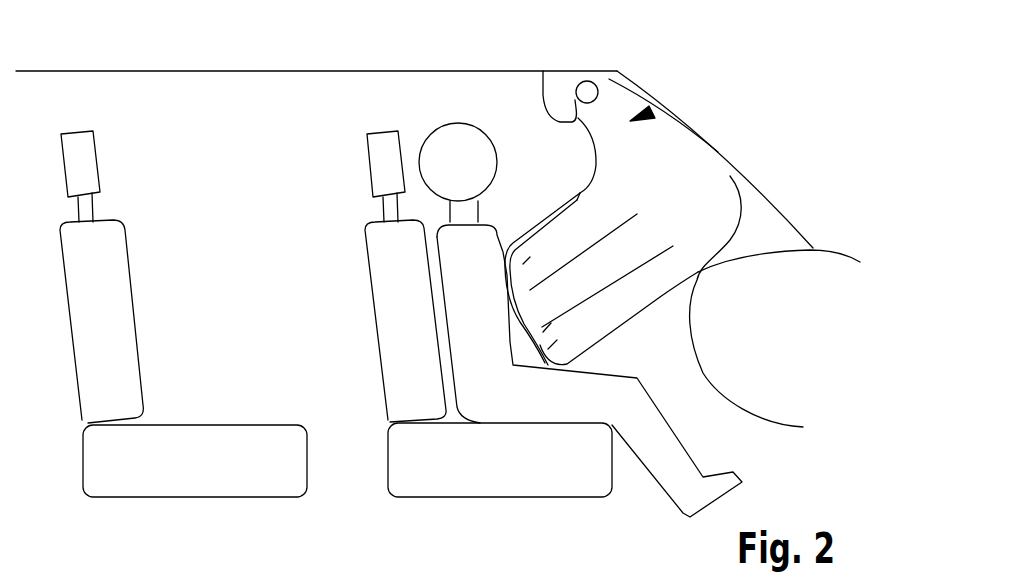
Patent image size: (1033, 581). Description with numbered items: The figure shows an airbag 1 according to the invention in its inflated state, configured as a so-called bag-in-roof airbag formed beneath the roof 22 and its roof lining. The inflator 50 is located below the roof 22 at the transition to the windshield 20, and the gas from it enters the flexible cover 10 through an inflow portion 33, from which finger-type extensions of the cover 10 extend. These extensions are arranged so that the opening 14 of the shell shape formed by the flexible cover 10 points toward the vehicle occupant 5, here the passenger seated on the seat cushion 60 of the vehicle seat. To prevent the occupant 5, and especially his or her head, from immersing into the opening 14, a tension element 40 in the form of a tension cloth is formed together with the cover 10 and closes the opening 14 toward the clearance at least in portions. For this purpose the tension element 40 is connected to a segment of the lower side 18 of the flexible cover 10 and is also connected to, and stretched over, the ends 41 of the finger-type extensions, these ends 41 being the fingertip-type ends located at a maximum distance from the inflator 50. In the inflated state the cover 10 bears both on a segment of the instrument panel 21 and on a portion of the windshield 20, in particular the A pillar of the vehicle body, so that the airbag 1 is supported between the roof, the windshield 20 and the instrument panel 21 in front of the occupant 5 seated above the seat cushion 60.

The airbag 1 is at (665, 99).
The vehicle occupant 5 is at (458, 134).
The flexible cover 10 is at (690, 160).
The opening 14 is at (545, 303).
The lower side 18 is at (543, 71).
The windshield 20 is at (753, 180).
The instrument panel 21 is at (763, 272).
The roof 22 is at (310, 70).
The inflow portion 33 is at (657, 132).
The tension element 40 is at (543, 221).
The ends of the finger-type extensions 41 is at (527, 260).
The inflator 50 is at (587, 81).
The seat cushion 60 is at (498, 500).